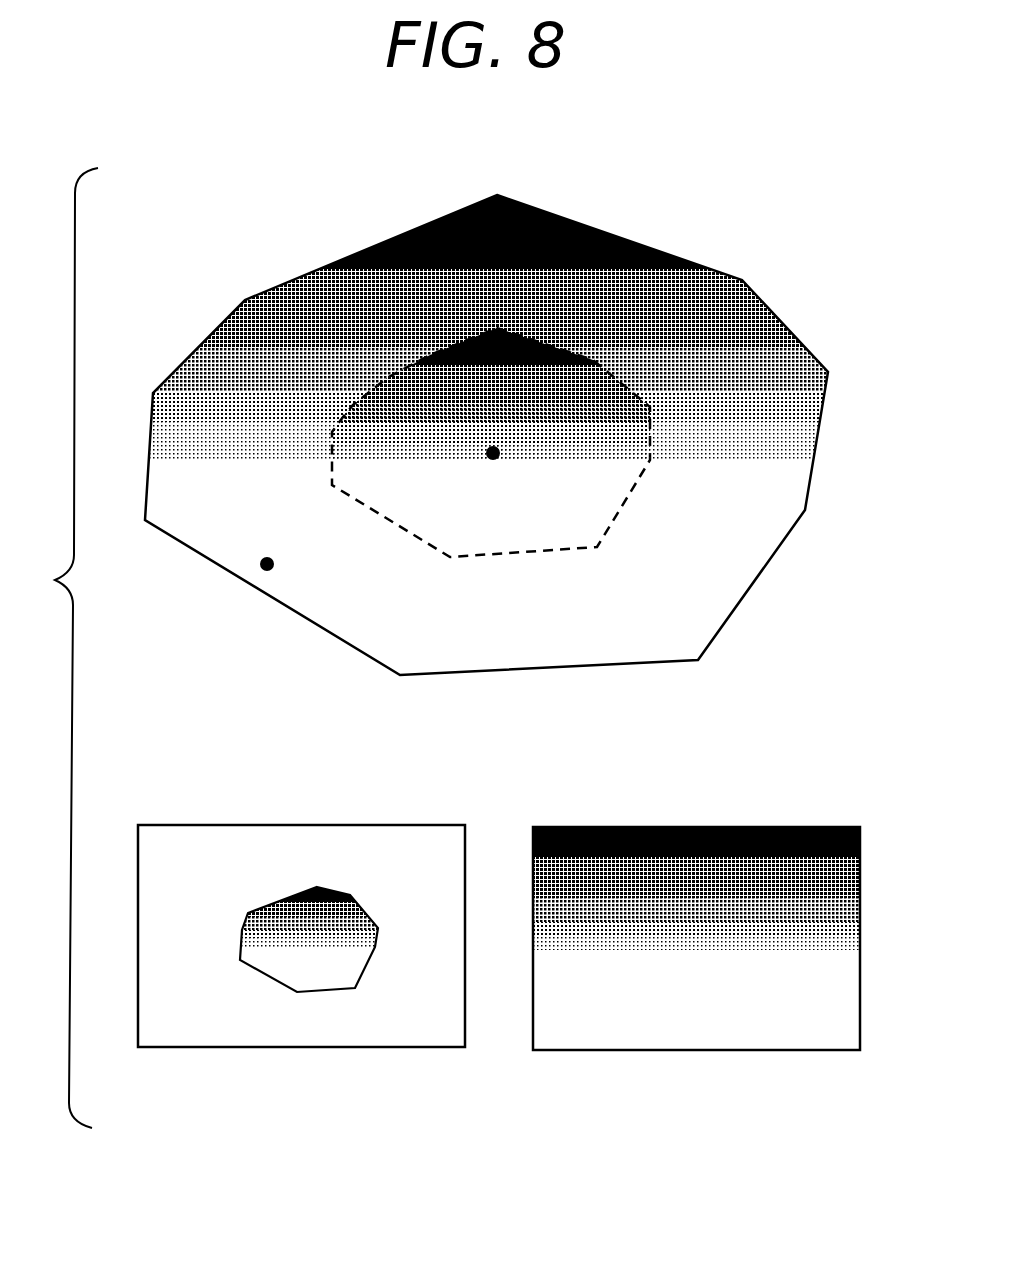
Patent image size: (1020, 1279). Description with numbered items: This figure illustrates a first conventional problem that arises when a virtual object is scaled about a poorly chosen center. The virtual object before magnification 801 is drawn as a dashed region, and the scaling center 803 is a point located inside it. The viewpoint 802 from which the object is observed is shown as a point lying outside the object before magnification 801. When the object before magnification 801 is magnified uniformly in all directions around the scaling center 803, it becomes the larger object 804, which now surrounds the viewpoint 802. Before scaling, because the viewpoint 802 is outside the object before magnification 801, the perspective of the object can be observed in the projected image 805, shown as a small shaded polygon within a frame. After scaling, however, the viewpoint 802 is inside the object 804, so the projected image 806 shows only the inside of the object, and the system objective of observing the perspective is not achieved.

The virtual object before magnification 801 is at (445, 527).
The viewpoint 802 is at (258, 573).
The scaling center 803 is at (497, 462).
The object after magnification 804 is at (787, 323).
The projected image before scaling 805 is at (352, 1048).
The projected image after scaling 806 is at (712, 1052).